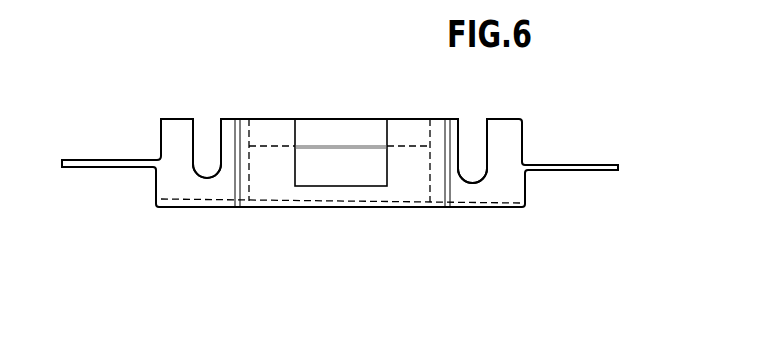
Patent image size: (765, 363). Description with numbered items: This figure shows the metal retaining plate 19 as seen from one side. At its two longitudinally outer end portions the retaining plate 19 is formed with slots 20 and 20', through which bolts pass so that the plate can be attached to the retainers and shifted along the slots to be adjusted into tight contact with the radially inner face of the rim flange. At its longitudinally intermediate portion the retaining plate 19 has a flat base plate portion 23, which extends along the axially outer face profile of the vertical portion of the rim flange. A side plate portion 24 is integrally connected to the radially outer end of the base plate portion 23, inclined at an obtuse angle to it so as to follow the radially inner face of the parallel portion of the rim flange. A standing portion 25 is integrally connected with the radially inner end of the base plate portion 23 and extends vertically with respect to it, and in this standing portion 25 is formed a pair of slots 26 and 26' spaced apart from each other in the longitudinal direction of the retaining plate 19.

The retaining plate 19 is at (505, 119).
The slot 20 is at (571, 148).
The slot 20' is at (109, 144).
The flat base plate portion 23 is at (364, 203).
The side plate portion 24 is at (350, 127).
The standing portion 25 is at (248, 122).
The slot 26 is at (472, 136).
The slot 26' is at (205, 135).